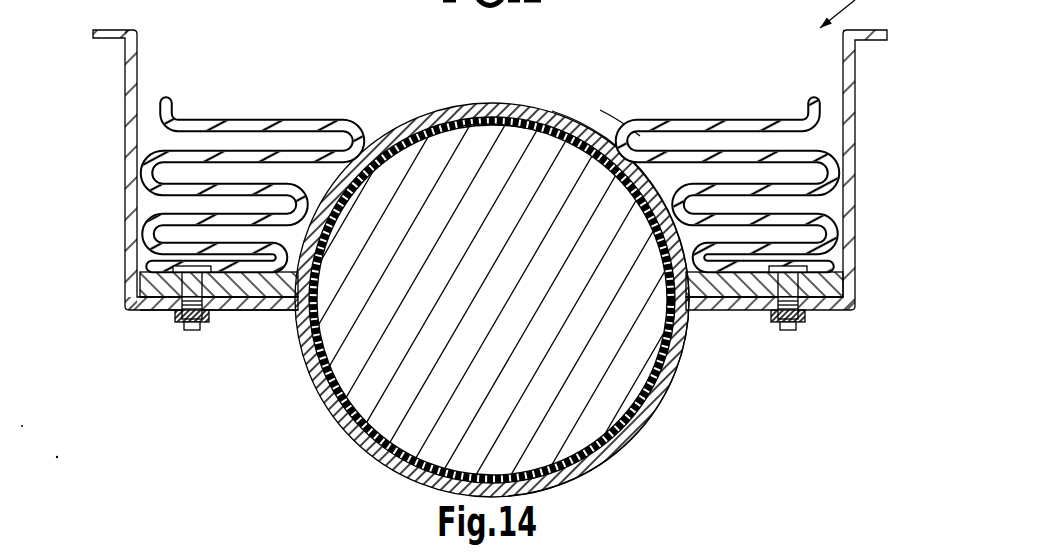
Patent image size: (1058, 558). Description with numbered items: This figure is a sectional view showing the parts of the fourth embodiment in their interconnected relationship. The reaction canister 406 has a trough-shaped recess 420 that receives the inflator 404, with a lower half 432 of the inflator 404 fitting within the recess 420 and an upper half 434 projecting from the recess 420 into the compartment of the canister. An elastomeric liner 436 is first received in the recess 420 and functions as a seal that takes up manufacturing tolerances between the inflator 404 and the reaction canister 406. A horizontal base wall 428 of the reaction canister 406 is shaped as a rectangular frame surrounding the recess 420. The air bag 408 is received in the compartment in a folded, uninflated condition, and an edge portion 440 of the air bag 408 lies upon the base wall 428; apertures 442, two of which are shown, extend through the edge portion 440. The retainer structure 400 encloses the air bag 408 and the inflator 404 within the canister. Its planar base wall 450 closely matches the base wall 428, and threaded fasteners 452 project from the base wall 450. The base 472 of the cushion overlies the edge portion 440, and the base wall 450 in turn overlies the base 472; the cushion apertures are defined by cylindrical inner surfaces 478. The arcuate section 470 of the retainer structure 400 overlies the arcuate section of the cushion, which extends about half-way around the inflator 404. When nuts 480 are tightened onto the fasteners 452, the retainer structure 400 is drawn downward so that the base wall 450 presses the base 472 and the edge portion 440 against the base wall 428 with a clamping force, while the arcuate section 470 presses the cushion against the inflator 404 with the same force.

The retainer structure 400 is at (490, 277).
The inflator 404 is at (411, 410).
The reaction canister 406 is at (124, 60).
The air bag 408 is at (446, 164).
The trough-shaped recess 420 is at (618, 303).
The horizontal base wall 428 is at (273, 307).
The lower half 432 is at (563, 427).
The upper half 434 is at (589, 178).
The elastomeric liner 436 is at (370, 422).
The edge portion 440 is at (303, 292).
The apertures 442 is at (158, 300).
The planar base wall 450 is at (245, 273).
The threaded fasteners 452 is at (197, 333).
The arcuate section 470 is at (512, 105).
The base 472 is at (300, 270).
The cylindrical inner surfaces 478 is at (490, 125).
The nuts 480 is at (210, 320).